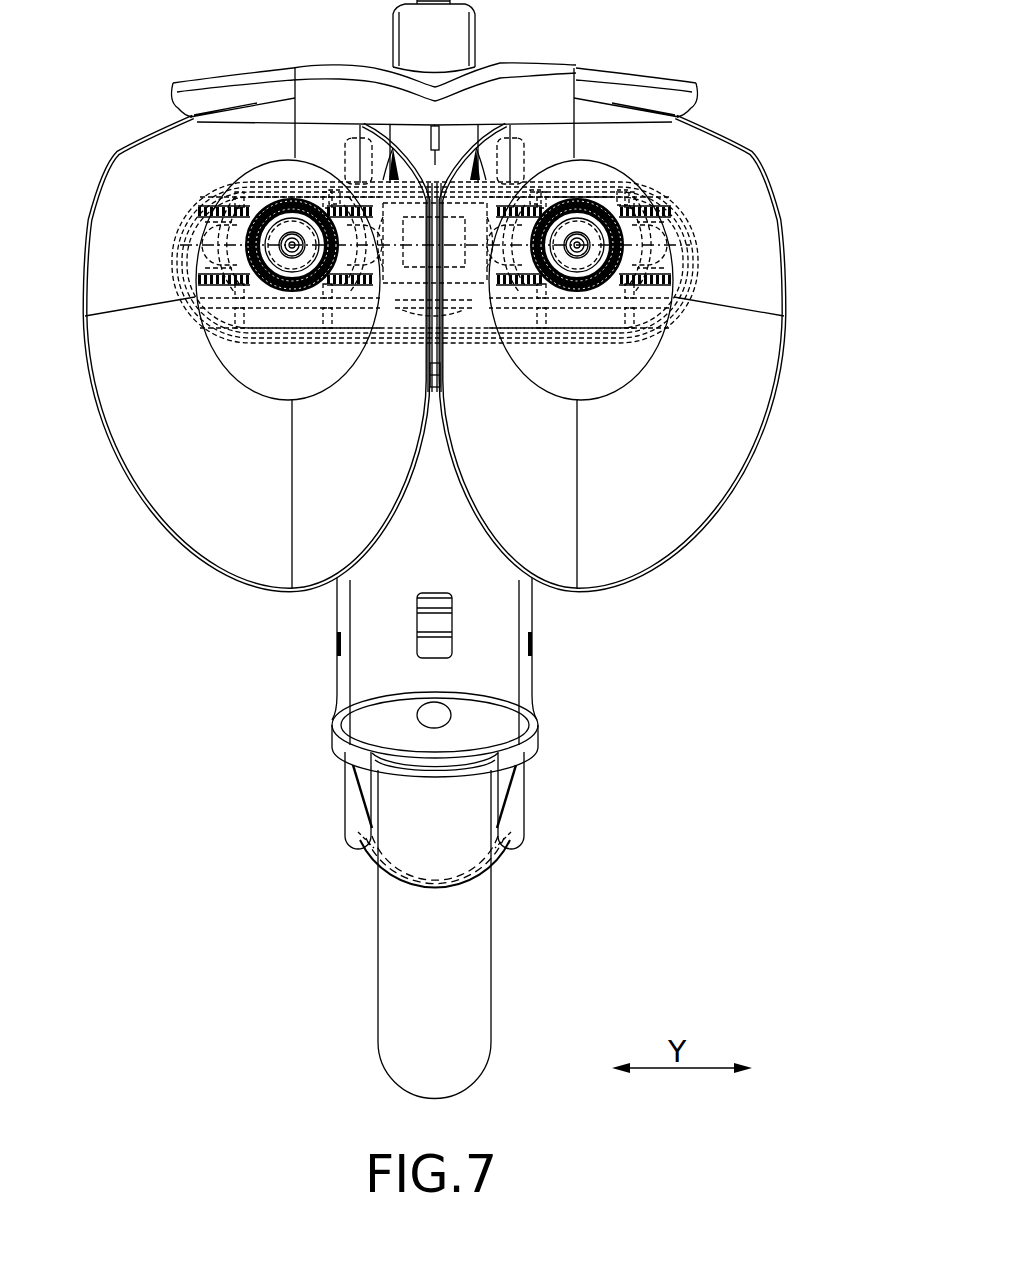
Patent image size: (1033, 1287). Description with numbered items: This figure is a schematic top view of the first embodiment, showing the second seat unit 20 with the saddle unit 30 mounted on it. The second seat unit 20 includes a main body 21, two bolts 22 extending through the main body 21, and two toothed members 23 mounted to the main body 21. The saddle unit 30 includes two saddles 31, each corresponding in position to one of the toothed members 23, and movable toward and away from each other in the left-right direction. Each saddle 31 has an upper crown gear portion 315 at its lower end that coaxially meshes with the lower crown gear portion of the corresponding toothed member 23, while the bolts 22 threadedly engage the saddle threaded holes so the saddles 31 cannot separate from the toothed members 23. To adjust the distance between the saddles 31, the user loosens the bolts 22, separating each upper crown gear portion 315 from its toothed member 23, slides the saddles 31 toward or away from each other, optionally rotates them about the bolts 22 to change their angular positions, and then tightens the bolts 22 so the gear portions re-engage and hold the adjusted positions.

The second seat unit 20 is at (186, 182).
The main body 21 is at (428, 198).
The bolts 22 is at (290, 236).
The toothed members 23 is at (540, 196).
The saddle unit 30 is at (734, 146).
The saddles 31 is at (106, 222).
The upper crown gear portion 315 is at (584, 198).